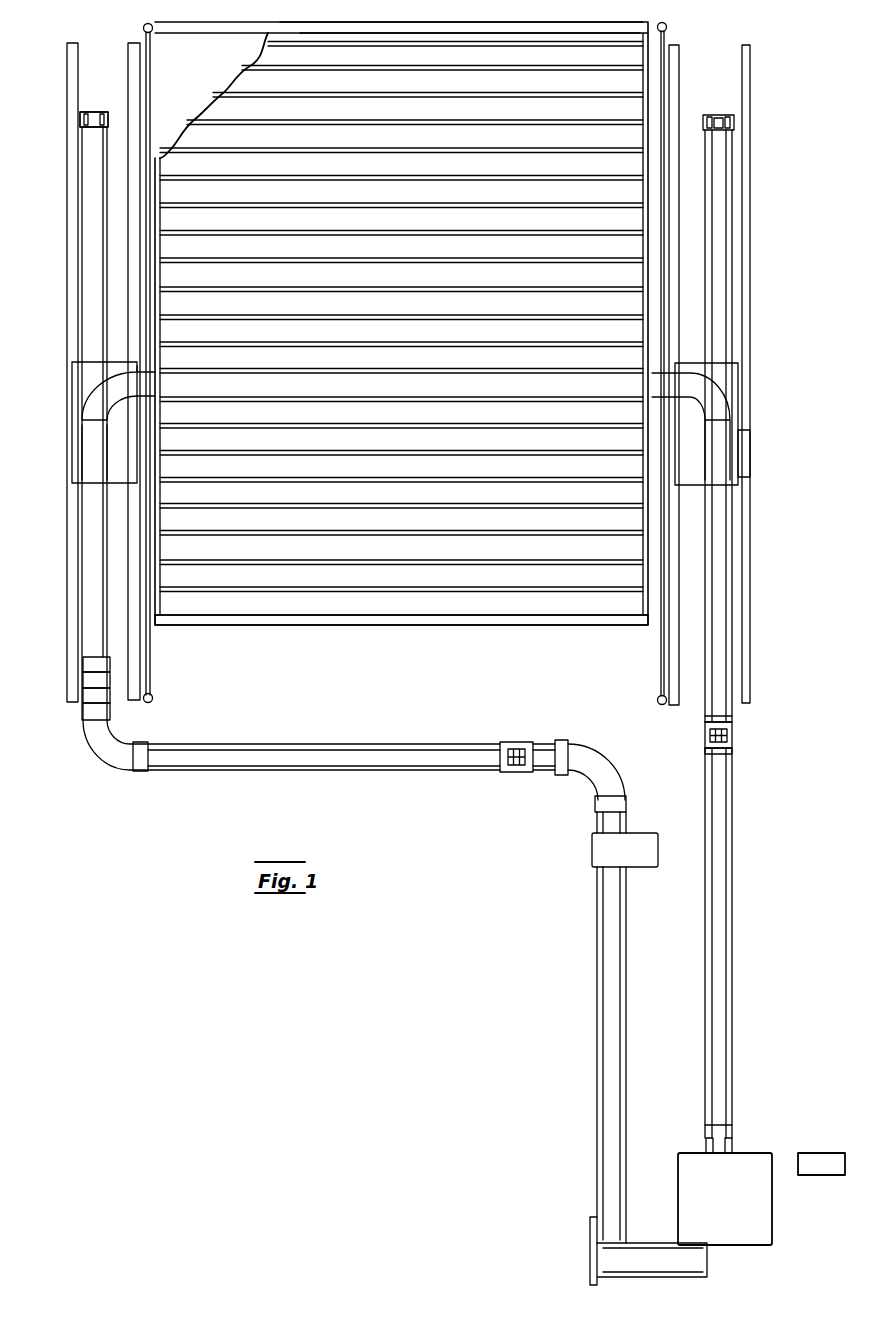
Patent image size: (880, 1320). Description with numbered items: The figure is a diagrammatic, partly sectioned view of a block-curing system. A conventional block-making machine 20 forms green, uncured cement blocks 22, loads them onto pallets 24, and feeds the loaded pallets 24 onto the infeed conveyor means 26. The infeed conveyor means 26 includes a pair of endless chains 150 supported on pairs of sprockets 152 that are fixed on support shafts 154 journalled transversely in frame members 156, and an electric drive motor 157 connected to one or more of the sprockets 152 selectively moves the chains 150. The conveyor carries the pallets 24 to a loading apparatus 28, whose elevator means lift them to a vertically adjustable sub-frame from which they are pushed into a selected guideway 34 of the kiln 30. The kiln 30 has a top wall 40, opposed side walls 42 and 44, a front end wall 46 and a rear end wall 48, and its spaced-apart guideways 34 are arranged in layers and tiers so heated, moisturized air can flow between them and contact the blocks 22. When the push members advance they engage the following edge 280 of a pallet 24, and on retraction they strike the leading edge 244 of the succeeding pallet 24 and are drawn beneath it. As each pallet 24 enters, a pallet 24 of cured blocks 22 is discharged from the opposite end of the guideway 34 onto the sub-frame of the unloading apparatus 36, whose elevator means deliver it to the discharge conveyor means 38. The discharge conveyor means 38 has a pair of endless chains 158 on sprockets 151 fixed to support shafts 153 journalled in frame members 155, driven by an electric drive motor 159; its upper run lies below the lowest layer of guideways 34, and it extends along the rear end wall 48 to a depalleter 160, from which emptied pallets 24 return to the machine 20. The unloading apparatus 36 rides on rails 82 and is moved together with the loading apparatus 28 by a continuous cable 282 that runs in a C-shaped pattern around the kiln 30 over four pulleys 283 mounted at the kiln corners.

The block-making machine 20 is at (748, 1216).
The cement blocks 22 is at (706, 738).
The pallets 24 is at (512, 772).
The infeed conveyor means 26 is at (732, 893).
The loading apparatus 28 is at (738, 410).
The kiln 30 is at (472, 146).
The guideway 34 is at (242, 605).
The unloading apparatus 36 is at (72, 405).
The discharge conveyor means 38 is at (178, 772).
The top wall 40 is at (214, 95).
The side wall 42 is at (438, 32).
The side wall 44 is at (328, 622).
The front end wall 46 is at (680, 58).
The rear end wall 48 is at (144, 36).
The rails 82 is at (676, 93).
The endless chains 150 is at (712, 800).
The sprockets 151 is at (90, 115).
The sprockets 152 is at (712, 142).
The support shafts 153 is at (86, 121).
The support shafts 154 is at (717, 1146).
The frame members 155 is at (110, 692).
The frame members 156 is at (732, 1126).
The electric drive motor 157 is at (712, 146).
The endless chains 158 is at (88, 584).
The electric drive motor 159 is at (88, 662).
The depalleter 160 is at (630, 848).
The leading edge 244 is at (545, 744).
The following edge 280 is at (722, 752).
The continuous cable 282 is at (523, 22).
The pulleys 283 is at (648, 27).